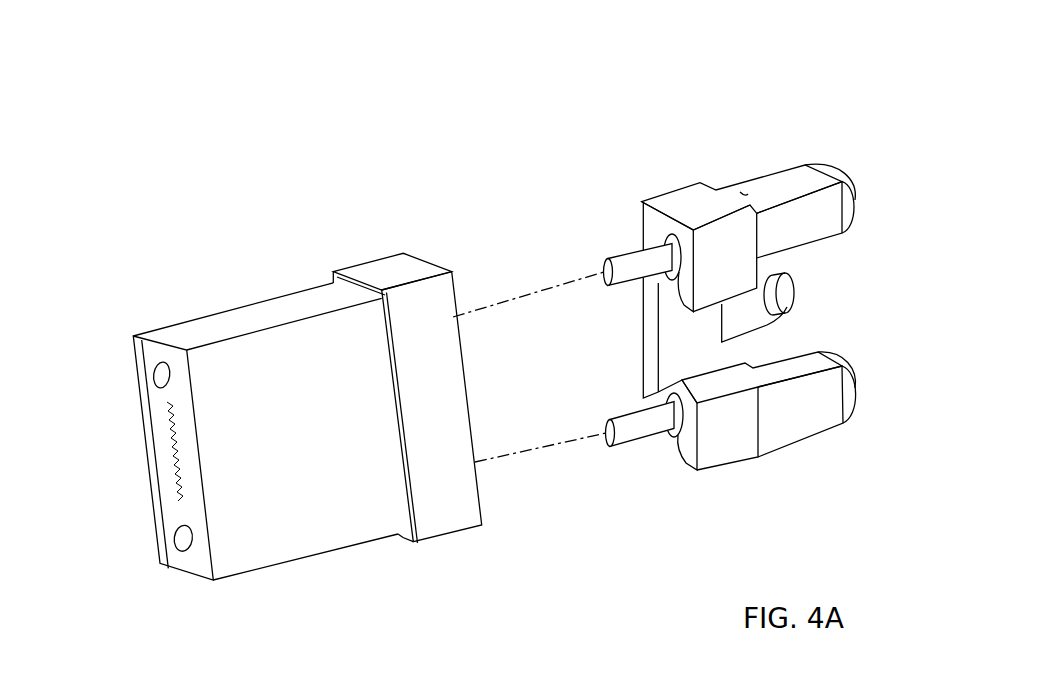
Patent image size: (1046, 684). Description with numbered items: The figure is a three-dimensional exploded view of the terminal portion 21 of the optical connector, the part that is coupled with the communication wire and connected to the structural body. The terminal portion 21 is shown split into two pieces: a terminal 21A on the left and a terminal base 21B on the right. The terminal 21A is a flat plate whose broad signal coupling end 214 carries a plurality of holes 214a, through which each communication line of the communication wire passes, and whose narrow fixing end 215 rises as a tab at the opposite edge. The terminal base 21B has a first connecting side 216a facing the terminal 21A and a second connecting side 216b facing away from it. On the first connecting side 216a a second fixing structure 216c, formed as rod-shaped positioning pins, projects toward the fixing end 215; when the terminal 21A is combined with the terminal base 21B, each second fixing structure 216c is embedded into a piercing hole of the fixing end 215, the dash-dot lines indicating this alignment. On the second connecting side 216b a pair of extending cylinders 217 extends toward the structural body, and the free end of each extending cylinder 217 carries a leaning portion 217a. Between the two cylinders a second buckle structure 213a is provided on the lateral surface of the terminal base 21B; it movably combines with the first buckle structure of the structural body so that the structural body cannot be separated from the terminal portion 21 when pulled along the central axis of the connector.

The terminal portion 21 is at (630, 88).
The terminal 21A is at (392, 263).
The terminal base 21B is at (670, 169).
The second buckle structure 213a is at (783, 295).
The signal coupling end 214 is at (200, 555).
The holes 214a is at (150, 421).
The fixing end 215 is at (467, 523).
The first connecting side 216a is at (627, 357).
The second connecting side 216b is at (927, 287).
The second fixing structure 216c is at (628, 427).
The extending cylinders 217 is at (793, 427).
The leaning portion 217a is at (855, 383).